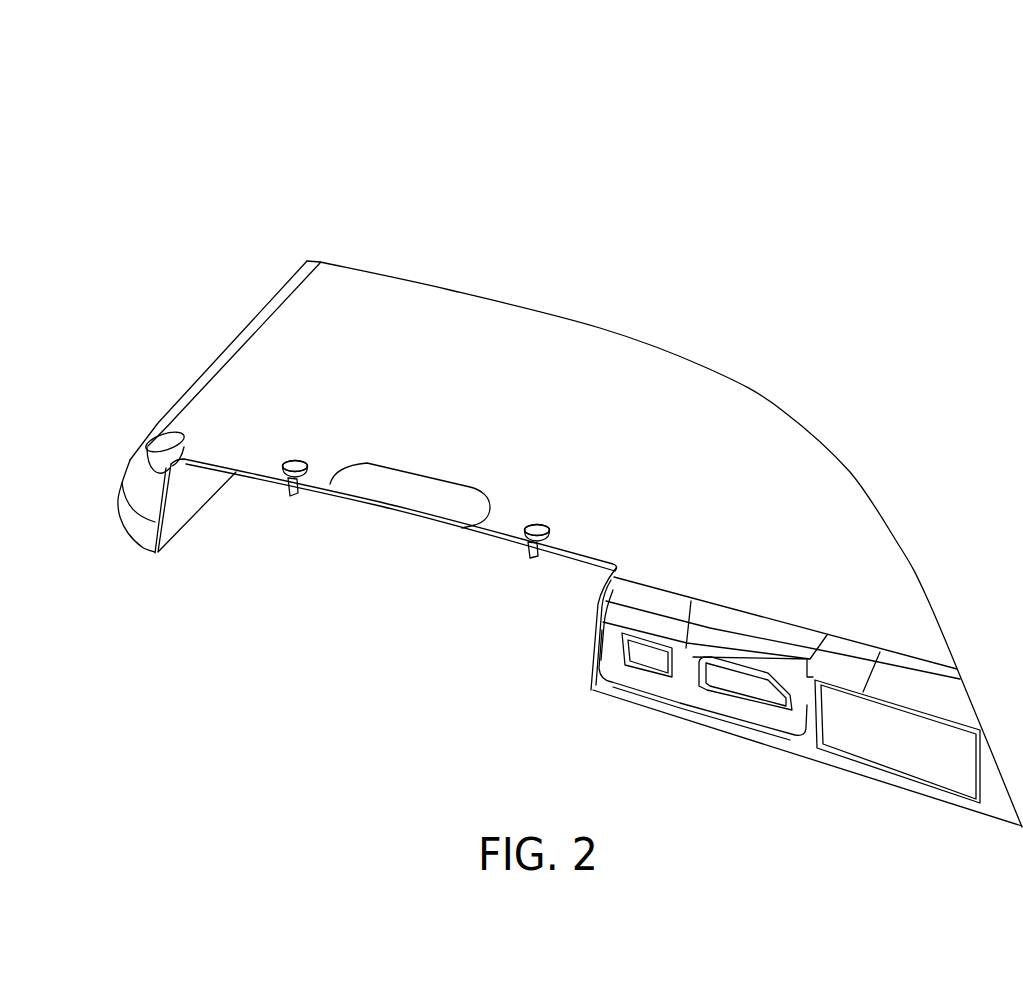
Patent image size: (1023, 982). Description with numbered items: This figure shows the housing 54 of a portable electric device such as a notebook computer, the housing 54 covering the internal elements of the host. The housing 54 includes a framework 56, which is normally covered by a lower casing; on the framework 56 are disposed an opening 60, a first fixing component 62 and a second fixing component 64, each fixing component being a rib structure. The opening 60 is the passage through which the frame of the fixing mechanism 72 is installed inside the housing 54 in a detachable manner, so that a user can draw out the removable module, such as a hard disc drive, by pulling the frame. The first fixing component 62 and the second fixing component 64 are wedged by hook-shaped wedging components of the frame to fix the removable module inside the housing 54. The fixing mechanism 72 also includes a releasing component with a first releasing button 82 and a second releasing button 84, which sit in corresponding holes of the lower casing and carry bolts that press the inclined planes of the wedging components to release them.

The fixing mechanism 72 is at (136, 88).
The housing 54 is at (218, 232).
The framework 56 is at (237, 333).
The opening 60 is at (547, 637).
The first fixing component 62 is at (297, 497).
The second fixing component 64 is at (531, 557).
The first releasing button 82 is at (297, 461).
The second releasing button 84 is at (540, 523).